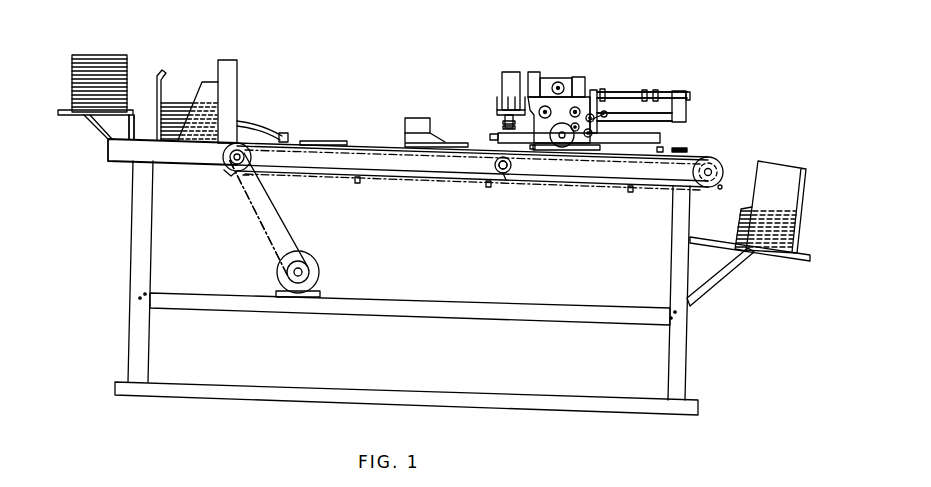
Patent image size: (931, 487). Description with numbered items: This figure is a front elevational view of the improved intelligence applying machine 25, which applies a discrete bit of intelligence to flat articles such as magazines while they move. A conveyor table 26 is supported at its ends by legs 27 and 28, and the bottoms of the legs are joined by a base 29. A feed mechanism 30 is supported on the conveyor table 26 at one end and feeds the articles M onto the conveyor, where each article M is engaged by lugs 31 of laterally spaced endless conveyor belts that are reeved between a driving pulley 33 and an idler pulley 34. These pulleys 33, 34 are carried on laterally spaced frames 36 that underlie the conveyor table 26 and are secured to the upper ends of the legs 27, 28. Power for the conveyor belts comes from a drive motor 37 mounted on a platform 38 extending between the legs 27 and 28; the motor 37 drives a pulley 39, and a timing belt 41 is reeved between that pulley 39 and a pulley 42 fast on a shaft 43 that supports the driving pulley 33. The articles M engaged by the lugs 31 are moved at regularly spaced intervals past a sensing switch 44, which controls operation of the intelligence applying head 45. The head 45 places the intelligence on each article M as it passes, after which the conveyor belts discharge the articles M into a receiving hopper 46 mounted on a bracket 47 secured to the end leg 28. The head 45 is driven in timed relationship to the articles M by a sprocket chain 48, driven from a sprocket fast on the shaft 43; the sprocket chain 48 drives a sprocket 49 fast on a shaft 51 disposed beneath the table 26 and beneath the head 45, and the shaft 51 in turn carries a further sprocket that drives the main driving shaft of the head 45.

The intelligence applying machine 25 is at (571, 46).
The conveyor table 26 is at (614, 177).
The leg 27 is at (133, 248).
The leg 28 is at (686, 372).
The base 29 is at (502, 400).
The feed mechanism 30 is at (190, 66).
The lug 31 is at (288, 133).
The driving pulley 33 is at (222, 168).
The idler pulley 34 is at (507, 173).
The frame 36 is at (163, 163).
The drive motor 37 is at (322, 273).
The platform 38 is at (510, 312).
The pulley 39 is at (304, 302).
The timing belt 41 is at (288, 220).
The pulley 42 is at (240, 182).
The shaft 43 is at (217, 163).
The sensing switch 44 is at (432, 136).
The intelligence applying head 45 is at (697, 118).
The receiving hopper 46 is at (799, 240).
The bracket 47 is at (722, 281).
The sprocket chain 48 is at (433, 173).
The sprocket 49 is at (500, 172).
The shaft 51 is at (509, 168).
The article M is at (325, 141).